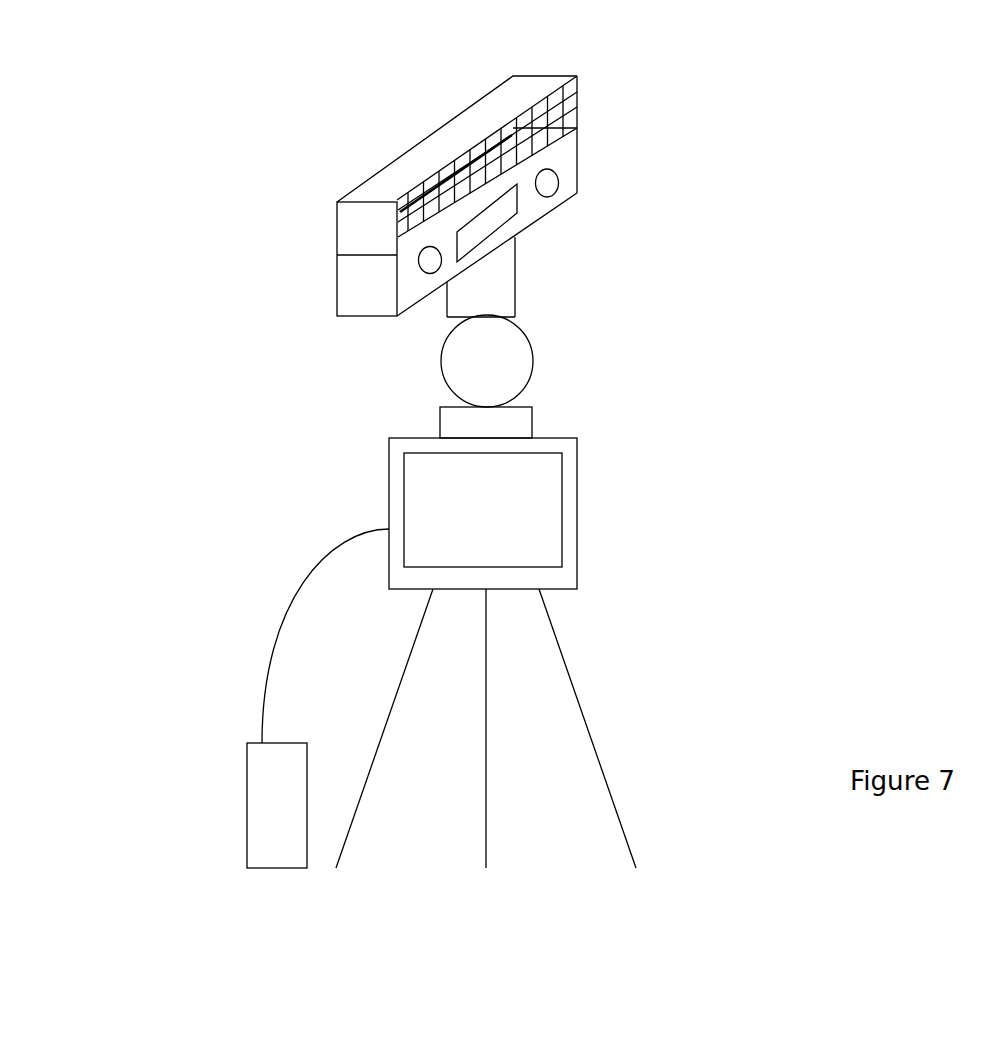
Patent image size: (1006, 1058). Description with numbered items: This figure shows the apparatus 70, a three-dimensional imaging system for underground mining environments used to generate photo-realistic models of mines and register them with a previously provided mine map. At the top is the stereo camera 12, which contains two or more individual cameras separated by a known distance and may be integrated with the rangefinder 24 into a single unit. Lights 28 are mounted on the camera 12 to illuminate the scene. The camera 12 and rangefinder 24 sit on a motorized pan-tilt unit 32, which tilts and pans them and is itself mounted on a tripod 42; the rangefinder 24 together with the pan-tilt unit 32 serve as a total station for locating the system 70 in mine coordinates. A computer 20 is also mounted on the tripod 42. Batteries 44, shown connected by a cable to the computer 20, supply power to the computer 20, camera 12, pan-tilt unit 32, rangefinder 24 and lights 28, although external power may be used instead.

The apparatus 70 is at (698, 150).
The stereo camera 12 is at (533, 203).
The lights 28 is at (470, 168).
The rangefinder 24 is at (493, 223).
The motorized pan-tilt unit 32 is at (495, 361).
The computer 20 is at (508, 497).
The tripod 42 is at (572, 677).
The batteries 44 is at (266, 775).